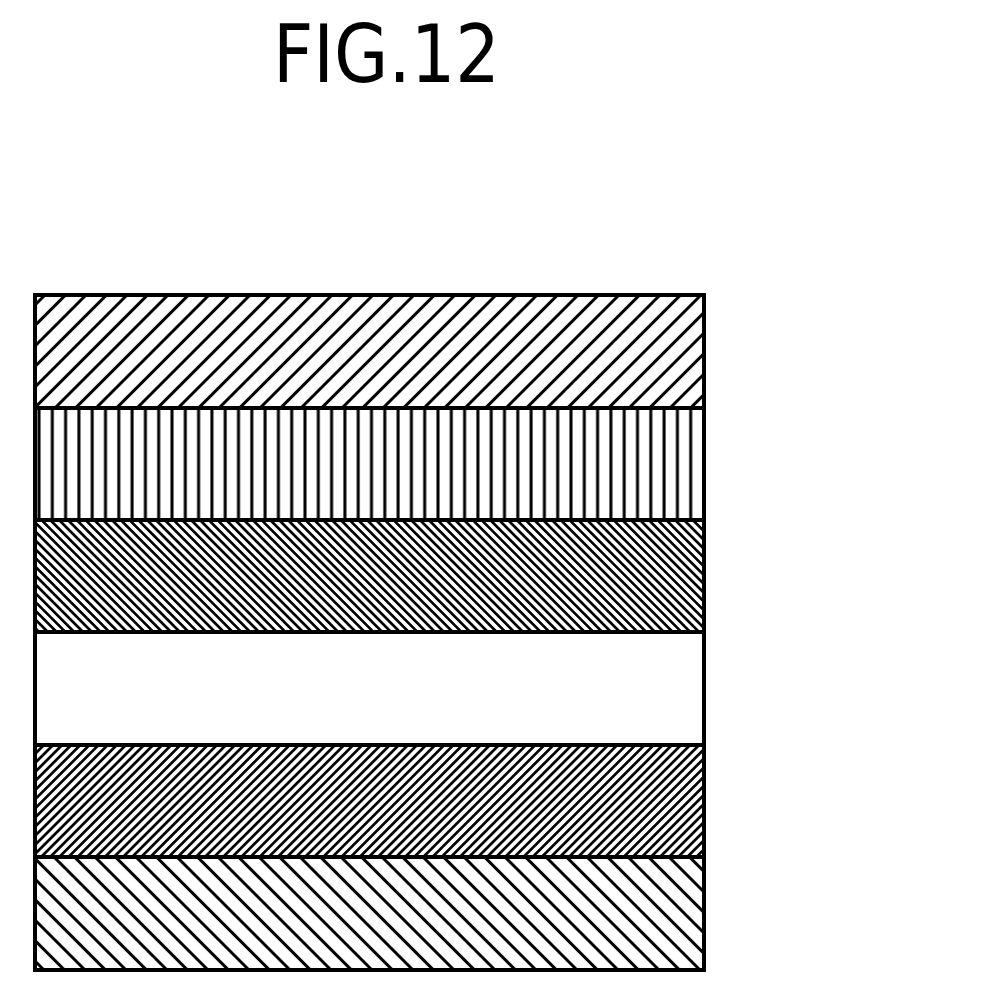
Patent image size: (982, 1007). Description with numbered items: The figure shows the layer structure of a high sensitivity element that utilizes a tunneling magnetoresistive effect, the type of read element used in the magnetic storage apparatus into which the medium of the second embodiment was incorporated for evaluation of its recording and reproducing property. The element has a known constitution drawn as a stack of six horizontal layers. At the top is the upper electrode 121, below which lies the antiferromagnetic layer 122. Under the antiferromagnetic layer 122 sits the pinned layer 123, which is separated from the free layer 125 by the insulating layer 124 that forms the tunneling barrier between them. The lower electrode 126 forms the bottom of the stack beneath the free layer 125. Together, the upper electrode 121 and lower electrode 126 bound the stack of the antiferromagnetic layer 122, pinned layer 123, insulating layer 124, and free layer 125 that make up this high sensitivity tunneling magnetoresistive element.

The upper electrode 121 is at (670, 347).
The antiferromagnetic layer 122 is at (670, 458).
The pinned layer 123 is at (670, 568).
The insulating layer 124 is at (668, 683).
The free layer 125 is at (670, 790).
The lower electrode 126 is at (670, 903).